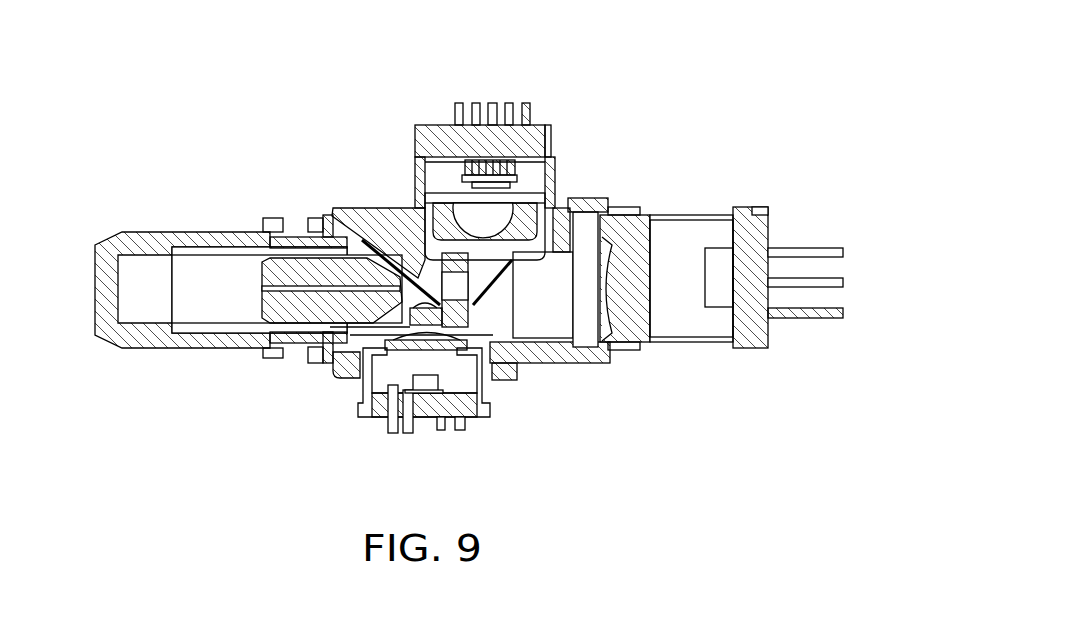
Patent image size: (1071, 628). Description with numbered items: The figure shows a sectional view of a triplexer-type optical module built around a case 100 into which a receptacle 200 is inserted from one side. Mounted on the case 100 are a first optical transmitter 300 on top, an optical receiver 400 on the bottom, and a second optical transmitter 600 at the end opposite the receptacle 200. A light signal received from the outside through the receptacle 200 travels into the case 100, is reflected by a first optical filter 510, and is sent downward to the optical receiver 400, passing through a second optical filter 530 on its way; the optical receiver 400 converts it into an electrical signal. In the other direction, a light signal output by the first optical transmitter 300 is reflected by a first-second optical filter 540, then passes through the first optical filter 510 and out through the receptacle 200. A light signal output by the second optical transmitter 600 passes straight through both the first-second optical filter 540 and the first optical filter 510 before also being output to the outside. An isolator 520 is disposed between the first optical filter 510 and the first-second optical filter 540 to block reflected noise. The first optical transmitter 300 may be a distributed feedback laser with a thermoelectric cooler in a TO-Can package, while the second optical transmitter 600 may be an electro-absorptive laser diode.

The case 100 is at (583, 364).
The receptacle 200 is at (214, 362).
The first optical transmitter 300 is at (549, 118).
The optical receiver 400 is at (479, 445).
The first optical filter 510 is at (413, 243).
The isolator 520 is at (498, 357).
The second optical filter 530 is at (410, 352).
The first-second optical filter 540 is at (500, 282).
The second optical transmitter 600 is at (686, 205).